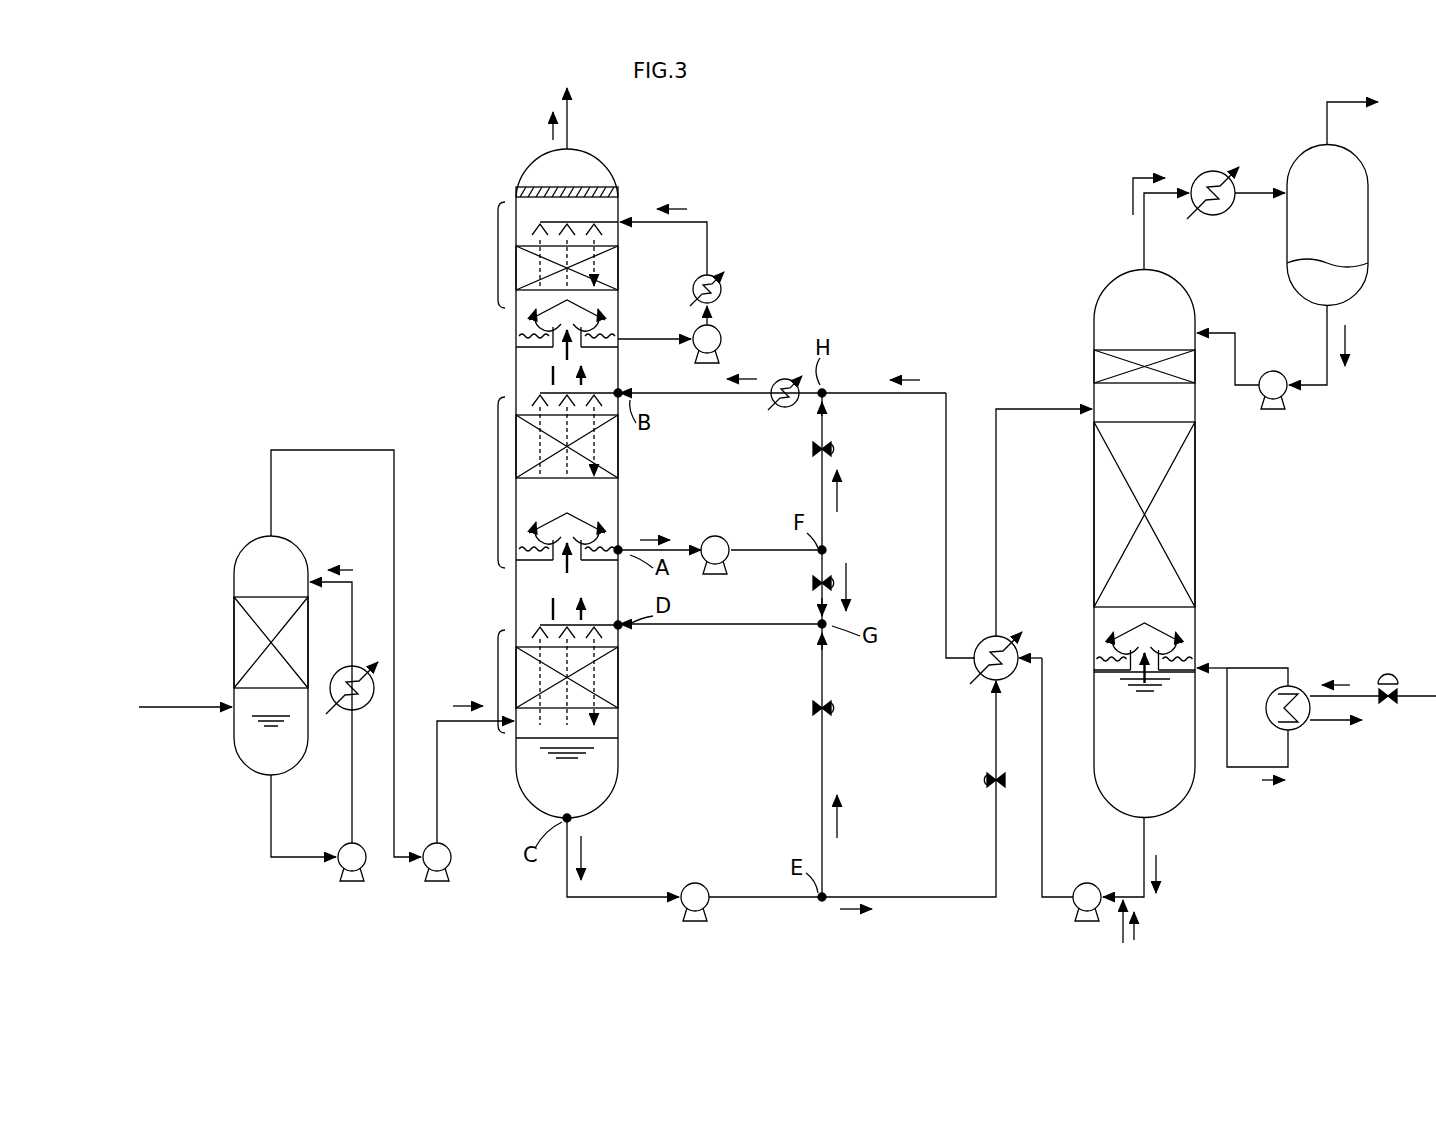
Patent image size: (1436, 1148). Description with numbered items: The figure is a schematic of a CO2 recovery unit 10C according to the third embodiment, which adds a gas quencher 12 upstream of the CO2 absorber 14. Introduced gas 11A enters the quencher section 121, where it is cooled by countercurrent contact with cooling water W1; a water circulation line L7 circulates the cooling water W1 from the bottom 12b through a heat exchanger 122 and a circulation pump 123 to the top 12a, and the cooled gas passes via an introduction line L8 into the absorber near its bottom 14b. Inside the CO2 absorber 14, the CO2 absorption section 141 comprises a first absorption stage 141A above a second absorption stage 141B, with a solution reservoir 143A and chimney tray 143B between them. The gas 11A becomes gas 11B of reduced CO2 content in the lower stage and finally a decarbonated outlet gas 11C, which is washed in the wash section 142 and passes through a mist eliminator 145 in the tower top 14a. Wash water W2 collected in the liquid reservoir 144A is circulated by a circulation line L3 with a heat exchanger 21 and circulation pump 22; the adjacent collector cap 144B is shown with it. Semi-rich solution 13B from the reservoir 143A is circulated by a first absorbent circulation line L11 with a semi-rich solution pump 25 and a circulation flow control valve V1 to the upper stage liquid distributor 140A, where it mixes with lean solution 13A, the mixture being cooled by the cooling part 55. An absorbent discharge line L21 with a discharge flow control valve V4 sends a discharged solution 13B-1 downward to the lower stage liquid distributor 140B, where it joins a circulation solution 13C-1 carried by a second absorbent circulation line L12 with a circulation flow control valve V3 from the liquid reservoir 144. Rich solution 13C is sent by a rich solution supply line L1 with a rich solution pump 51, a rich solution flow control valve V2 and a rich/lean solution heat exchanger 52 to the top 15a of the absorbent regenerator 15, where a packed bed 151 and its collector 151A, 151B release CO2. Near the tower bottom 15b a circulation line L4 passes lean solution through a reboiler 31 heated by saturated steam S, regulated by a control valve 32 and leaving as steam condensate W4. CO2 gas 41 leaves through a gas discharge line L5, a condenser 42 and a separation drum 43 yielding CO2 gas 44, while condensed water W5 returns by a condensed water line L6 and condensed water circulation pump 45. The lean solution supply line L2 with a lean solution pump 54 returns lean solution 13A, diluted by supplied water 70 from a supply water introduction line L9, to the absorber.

The CO2 recovery unit 10C is at (942, 130).
The introduced gas 11A is at (180, 695).
The introduced gas with reduced CO2 concentration 11B is at (560, 588).
The decarbonated outlet gas 11C is at (552, 128).
The gas quencher 12 is at (220, 540).
The top of the gas quencher 12a is at (300, 540).
The bottom of the gas quencher 12b is at (250, 775).
The quencher section 121 is at (236, 625).
The heat exchanger 122 is at (340, 715).
The circulation pump 123 is at (343, 845).
The lean solution 13A is at (760, 375).
The semi-rich solution 13B is at (650, 538).
The rich solution 13C is at (615, 758).
The discharged solution 13B-1 is at (850, 582).
The circulation solution 13C-1 is at (840, 822).
The CO2 absorber 14 is at (492, 188).
The tower top 14a is at (585, 160).
The bottom of the CO2 absorber 14b is at (610, 795).
The upper stage liquid distributor 140A is at (525, 398).
The lower stage liquid distributor 140B is at (525, 628).
The CO2 absorption section 141 is at (496, 548).
The first CO2 absorption stage 141A is at (512, 452).
The second CO2 absorption stage 141B is at (512, 676).
The wash section 142 is at (497, 283).
The solution reservoir 143A is at (530, 545).
The chimney tray 143B is at (550, 520).
The liquid reservoir 144 is at (548, 818).
The liquid reservoir 144A is at (600, 337).
The collector cap 144B is at (548, 312).
The mist eliminator 145 is at (545, 190).
The absorbent regenerator 15 is at (1212, 518).
The top of the absorbent regenerator 15a is at (1112, 300).
The tower bottom of the absorbent regenerator 15b is at (1172, 806).
The packed bed 151 is at (1198, 558).
The collector cap 151A is at (1125, 625).
The collector tray 151B is at (1115, 645).
The heat exchanger 21 is at (722, 287).
The circulation pump 22 is at (725, 332).
The semi-rich solution pump 25 is at (720, 533).
The reboiler 31 is at (1292, 688).
The control valve 32 is at (1388, 678).
The CO2 gas 41 is at (1135, 175).
The condenser 42 is at (1210, 170).
The separation drum 43 is at (1370, 225).
The CO2 gas 44 is at (1340, 100).
The condensed water circulation pump 45 is at (1273, 370).
The rich solution pump 51 is at (695, 880).
The rich/lean solution heat exchanger 52 is at (985, 680).
The lean solution pump 54 is at (1088, 880).
The cooling part 55 is at (785, 412).
The supplied water 70 is at (1140, 940).
The circulation flow control valve V1 is at (838, 449).
The rich solution flow control valve V2 is at (982, 778).
The circulation flow control valve V3 is at (838, 708).
The discharge flow control valve V4 is at (840, 578).
The rich solution supply line L1 is at (965, 900).
The lean solution supply line L2 is at (1040, 880).
The circulation line L3 is at (707, 215).
The circulation line L4 is at (1255, 666).
The gas discharge line L5 is at (1260, 188).
The condensed water line L6 is at (1300, 388).
The water circulation line L7 is at (271, 840).
The introduction line L8 is at (437, 775).
The supply water introduction line L9 is at (1118, 930).
The first absorbent circulation line L11 is at (776, 528).
The second absorbent circulation line L12 is at (828, 680).
The absorbent discharge line L21 is at (815, 607).
The cooling water W1 is at (355, 565).
The wash water W2 is at (690, 208).
The steam condensate W4 is at (1340, 728).
The condensed water W5 is at (1350, 345).
The saturated steam S is at (1352, 678).